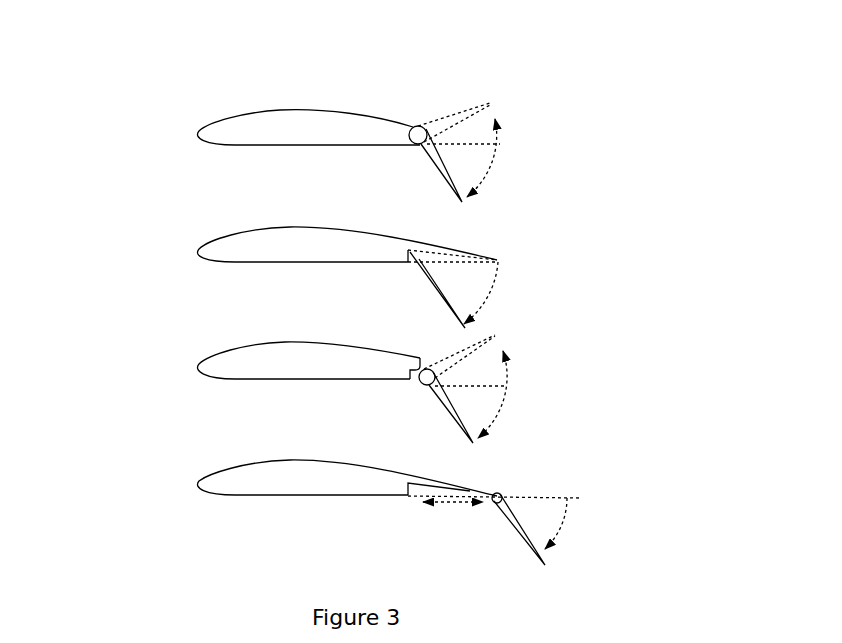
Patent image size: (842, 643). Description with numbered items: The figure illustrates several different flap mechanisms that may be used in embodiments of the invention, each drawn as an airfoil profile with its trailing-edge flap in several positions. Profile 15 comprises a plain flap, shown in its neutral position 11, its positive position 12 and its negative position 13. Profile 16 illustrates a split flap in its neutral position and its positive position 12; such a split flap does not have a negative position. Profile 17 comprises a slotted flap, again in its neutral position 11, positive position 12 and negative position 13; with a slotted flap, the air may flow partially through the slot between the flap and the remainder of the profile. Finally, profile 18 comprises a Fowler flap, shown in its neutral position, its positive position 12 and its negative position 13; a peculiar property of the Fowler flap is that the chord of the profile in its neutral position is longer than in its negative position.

The neutral position 11 is at (500, 143).
The positive position 12 is at (433, 175).
The negative position 13 is at (450, 117).
The profile 15 is at (212, 111).
The profile 16 is at (182, 247).
The profile 17 is at (182, 355).
The profile 18 is at (187, 462).